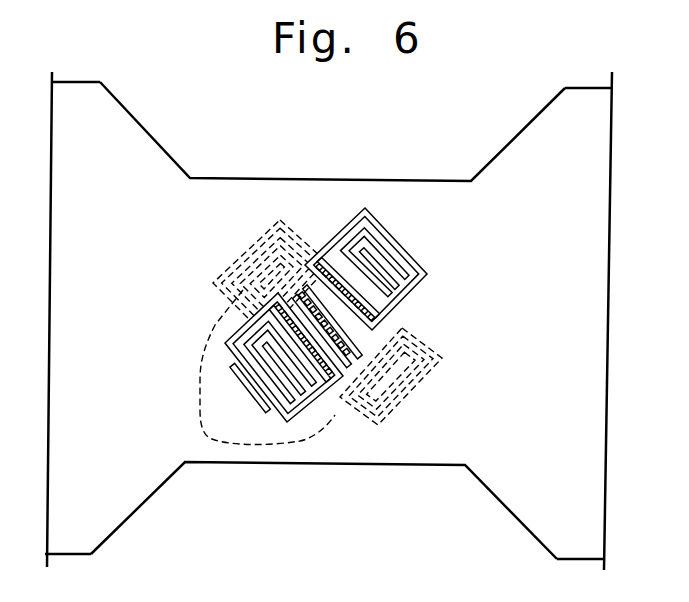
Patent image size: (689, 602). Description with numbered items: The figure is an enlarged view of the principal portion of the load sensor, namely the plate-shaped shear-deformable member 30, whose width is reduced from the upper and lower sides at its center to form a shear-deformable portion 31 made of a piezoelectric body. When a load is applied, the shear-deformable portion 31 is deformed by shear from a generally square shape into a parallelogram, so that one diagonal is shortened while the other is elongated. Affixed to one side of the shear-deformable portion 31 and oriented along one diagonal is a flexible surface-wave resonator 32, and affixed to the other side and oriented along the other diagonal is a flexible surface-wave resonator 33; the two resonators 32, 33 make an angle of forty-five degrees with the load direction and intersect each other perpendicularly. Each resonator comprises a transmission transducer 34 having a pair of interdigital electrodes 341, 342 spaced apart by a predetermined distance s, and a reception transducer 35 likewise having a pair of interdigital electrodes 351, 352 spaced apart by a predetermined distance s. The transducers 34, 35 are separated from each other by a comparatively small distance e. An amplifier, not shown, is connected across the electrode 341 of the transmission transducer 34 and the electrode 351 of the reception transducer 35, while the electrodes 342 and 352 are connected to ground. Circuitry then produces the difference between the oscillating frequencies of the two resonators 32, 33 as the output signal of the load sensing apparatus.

The shear-deformable member 30 is at (84, 82).
The shear-deformable portion 31 is at (233, 186).
The flexible surface-wave resonator 32 is at (392, 529).
The flexible surface-wave resonator 33 is at (274, 315).
The transmission transducer 34 is at (284, 357).
The reception transducer 35 is at (366, 269).
The interdigital electrode 341 is at (284, 357).
The interdigital electrode 342 is at (280, 362).
The interdigital electrode 351 is at (366, 269).
The interdigital electrode 352 is at (375, 262).
The distance between transducers e is at (328, 326).
The electrode spacing s is at (250, 387).